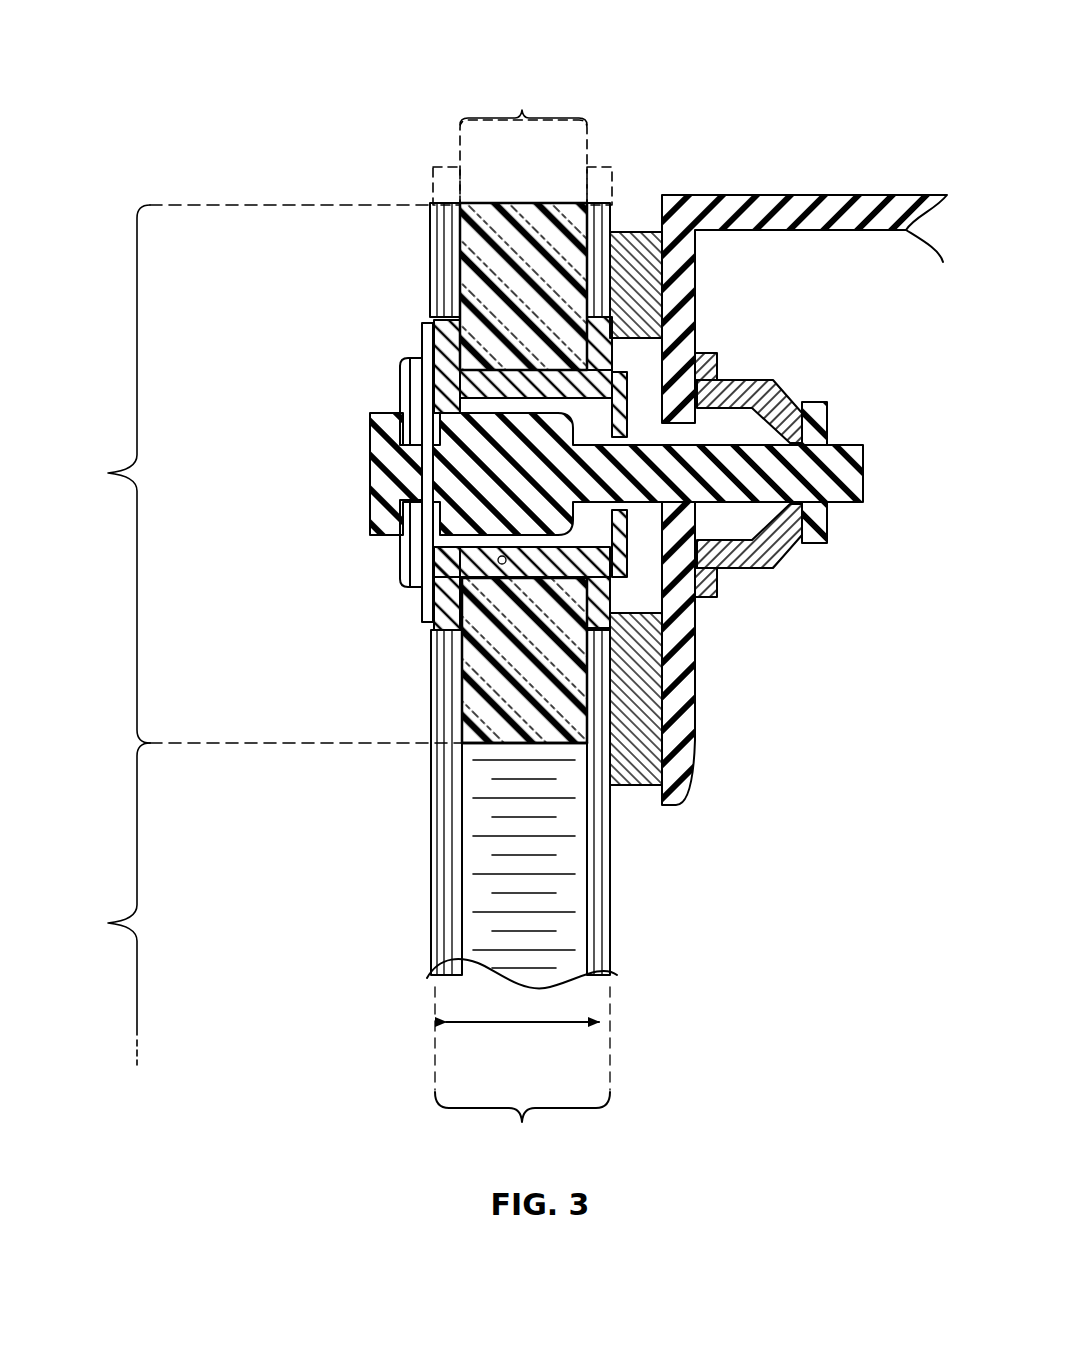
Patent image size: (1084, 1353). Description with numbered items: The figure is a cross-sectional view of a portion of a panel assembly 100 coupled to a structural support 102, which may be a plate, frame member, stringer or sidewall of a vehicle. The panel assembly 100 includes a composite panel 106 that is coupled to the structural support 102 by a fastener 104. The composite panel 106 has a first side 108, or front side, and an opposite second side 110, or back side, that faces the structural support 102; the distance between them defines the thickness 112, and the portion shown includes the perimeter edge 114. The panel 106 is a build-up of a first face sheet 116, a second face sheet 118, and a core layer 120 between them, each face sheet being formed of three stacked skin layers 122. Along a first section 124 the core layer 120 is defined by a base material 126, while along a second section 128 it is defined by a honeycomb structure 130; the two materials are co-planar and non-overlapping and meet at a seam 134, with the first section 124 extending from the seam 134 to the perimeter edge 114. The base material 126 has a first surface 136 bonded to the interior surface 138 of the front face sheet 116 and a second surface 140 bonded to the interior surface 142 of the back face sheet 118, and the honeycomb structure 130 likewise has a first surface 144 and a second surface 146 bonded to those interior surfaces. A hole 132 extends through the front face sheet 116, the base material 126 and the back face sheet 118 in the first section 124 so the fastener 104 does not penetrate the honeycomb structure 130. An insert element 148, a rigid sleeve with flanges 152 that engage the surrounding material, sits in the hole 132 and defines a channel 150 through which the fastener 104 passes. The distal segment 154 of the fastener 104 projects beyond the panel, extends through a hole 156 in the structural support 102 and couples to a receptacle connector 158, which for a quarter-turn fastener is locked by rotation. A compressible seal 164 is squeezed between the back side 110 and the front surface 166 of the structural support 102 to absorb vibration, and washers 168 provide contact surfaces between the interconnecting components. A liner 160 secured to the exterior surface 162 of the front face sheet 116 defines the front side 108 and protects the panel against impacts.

The panel assembly 100 is at (313, 99).
The structural support 102 is at (877, 203).
The fastener 104 is at (380, 467).
The composite panel 106 is at (522, 1128).
The first side 108 is at (435, 930).
The second side 110 is at (612, 905).
The thickness 112 is at (538, 1023).
The perimeter edge 114 is at (503, 203).
The first face sheet 116 is at (450, 167).
The second face sheet 118 is at (598, 167).
The core layer 120 is at (523, 138).
The skin layers 122 is at (607, 887).
The first section 124 is at (252, 474).
The base material 126 is at (528, 203).
The second section 128 is at (100, 904).
The honeycomb structure 130 is at (487, 930).
The hole 132 is at (495, 358).
The seam 134 is at (553, 748).
The first surface 136 is at (430, 257).
The interior surface 138 is at (460, 282).
The second surface 140 is at (668, 742).
The interior surface 142 is at (665, 653).
The first surface 144 is at (462, 893).
The second surface 146 is at (583, 940).
The insert element 148 is at (498, 563).
The channel 150 is at (456, 397).
The flanges 152 is at (452, 343).
The distal segment 154 is at (824, 433).
The hole 156 is at (686, 514).
The receptacle connector 158 is at (772, 393).
The liner 160 is at (442, 247).
The exterior surface 162 is at (460, 235).
The compressible seal 164 is at (655, 727).
The front surface 166 is at (663, 686).
The washers 168 is at (410, 346).